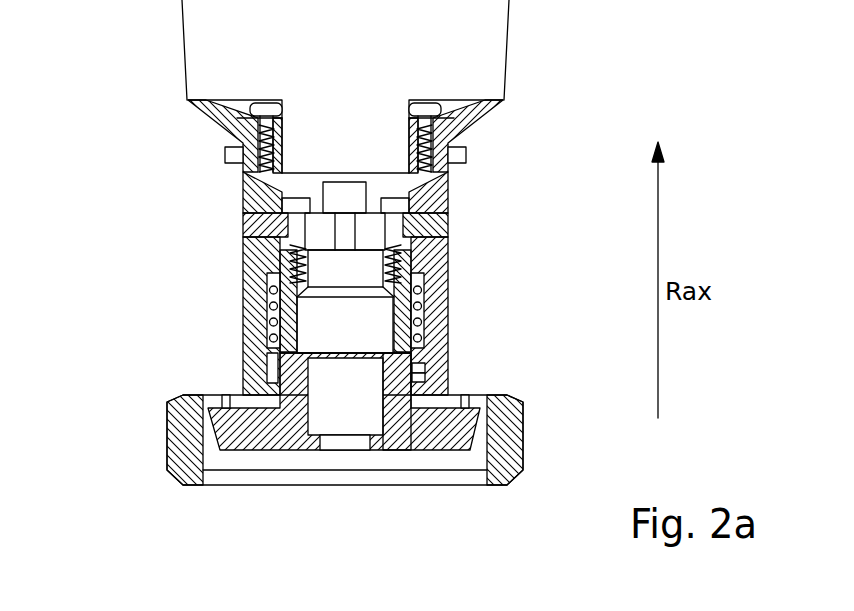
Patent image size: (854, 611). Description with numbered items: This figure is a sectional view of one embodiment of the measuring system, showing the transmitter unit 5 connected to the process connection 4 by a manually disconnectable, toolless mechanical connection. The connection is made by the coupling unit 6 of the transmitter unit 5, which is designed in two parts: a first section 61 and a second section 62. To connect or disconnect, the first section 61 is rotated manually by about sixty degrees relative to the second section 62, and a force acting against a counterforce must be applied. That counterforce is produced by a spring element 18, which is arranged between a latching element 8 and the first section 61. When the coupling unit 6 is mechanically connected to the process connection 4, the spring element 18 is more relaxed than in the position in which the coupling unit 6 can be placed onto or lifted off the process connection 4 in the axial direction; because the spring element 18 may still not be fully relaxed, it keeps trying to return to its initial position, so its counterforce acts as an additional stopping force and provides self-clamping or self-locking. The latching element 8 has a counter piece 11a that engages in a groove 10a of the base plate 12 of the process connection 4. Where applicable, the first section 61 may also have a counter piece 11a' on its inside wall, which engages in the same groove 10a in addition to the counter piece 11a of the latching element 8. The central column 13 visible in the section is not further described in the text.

The transmitter unit 5 is at (108, 110).
The coupling unit 6 is at (478, 229).
The second section 62 is at (258, 200).
The spring element 18 is at (270, 307).
The first section 61 is at (445, 270).
The latching element 8 is at (320, 325).
The process connection 4 is at (175, 447).
The base plate 12 is at (257, 432).
The column 13 is at (350, 418).
The groove 10a is at (411, 408).
The counter piece 11a is at (484, 355).
The counter piece 11a' is at (488, 376).